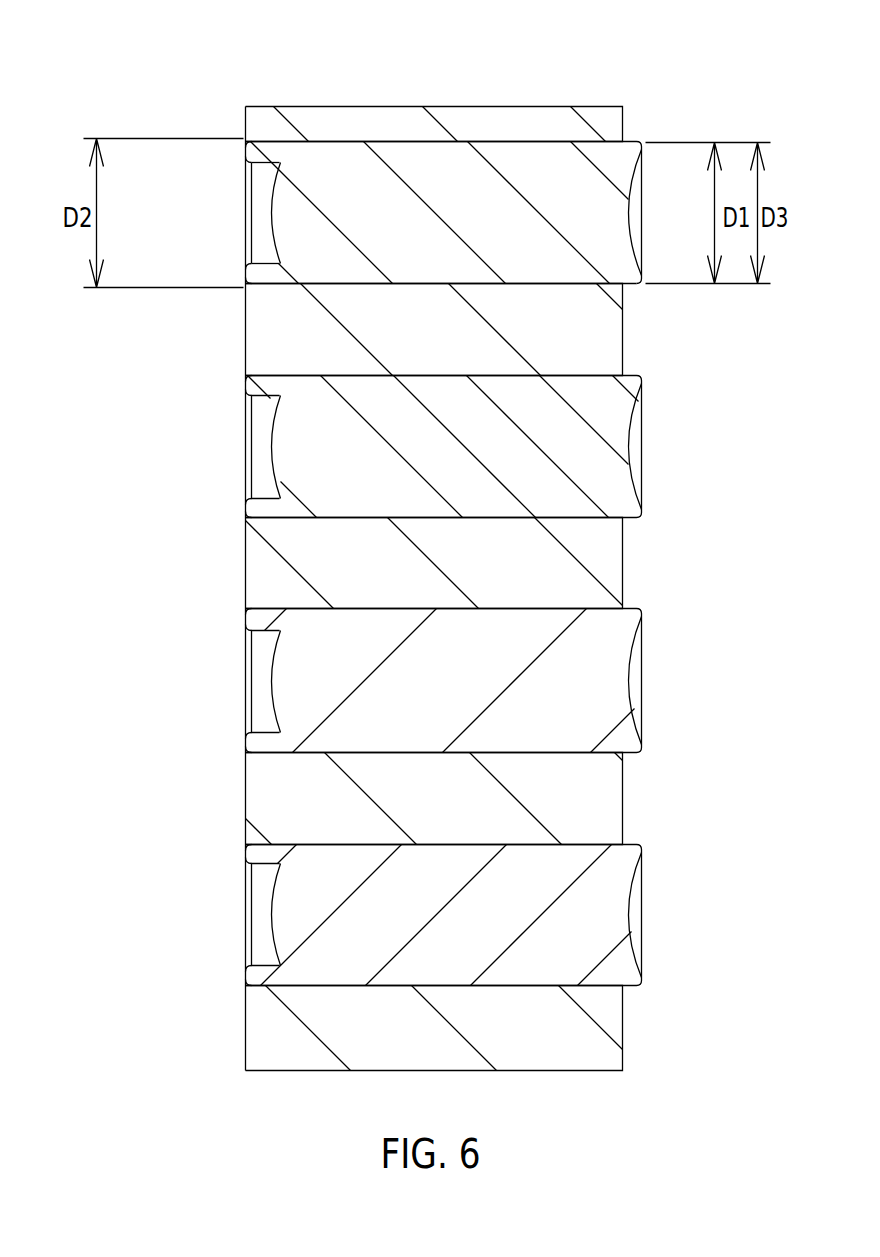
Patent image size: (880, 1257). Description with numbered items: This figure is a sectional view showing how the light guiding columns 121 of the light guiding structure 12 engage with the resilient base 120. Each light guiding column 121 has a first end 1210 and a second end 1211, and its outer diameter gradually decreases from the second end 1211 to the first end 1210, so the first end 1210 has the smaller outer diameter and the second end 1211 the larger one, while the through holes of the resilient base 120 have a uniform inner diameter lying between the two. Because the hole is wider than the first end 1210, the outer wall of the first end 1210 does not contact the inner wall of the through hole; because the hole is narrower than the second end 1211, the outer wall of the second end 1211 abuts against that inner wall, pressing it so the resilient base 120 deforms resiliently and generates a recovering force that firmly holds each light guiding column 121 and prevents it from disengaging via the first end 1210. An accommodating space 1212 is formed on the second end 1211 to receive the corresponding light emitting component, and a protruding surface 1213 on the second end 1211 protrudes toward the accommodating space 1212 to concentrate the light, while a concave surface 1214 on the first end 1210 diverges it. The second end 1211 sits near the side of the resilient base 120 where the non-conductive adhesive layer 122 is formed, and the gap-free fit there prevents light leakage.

The light guiding structure 12 is at (710, 70).
The resilient base 120 is at (594, 347).
The light guiding column 121 is at (647, 127).
The non-conductive adhesive layer 122 is at (243, 562).
The first end 1210 is at (630, 290).
The second end 1211 is at (250, 268).
The accommodating space 1212 is at (246, 214).
The protruding surface 1213 is at (250, 180).
The concave surface 1214 is at (632, 215).